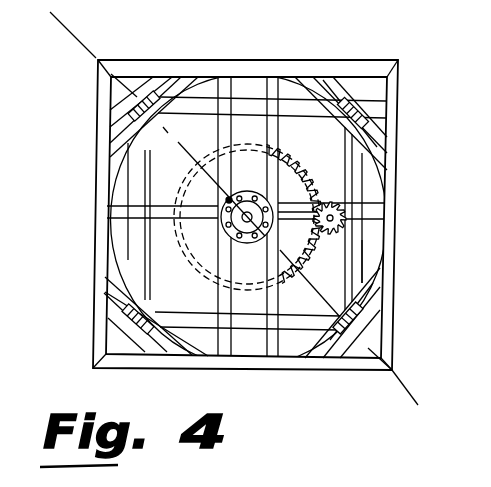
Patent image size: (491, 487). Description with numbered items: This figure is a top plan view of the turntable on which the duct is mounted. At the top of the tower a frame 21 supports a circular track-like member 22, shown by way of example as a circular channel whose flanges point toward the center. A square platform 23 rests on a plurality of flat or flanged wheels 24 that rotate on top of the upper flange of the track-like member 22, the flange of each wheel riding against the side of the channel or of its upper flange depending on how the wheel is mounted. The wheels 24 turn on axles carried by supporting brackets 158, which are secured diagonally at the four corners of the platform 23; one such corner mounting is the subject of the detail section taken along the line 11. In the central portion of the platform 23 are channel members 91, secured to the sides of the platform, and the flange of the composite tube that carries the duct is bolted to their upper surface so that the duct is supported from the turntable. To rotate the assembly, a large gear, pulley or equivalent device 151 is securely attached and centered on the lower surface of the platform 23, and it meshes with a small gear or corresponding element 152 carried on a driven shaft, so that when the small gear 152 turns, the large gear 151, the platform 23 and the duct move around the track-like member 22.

The section line 11 is at (220, 228).
The supporting bracket 158 is at (322, 84).
The flanged or flat wheel 24 is at (368, 112).
The platform 23 is at (407, 153).
The frame 21 is at (364, 191).
The circular track-like member 22 is at (368, 267).
The channel members 91 is at (260, 187).
The large gear 151 is at (185, 258).
The small gear 152 is at (328, 235).